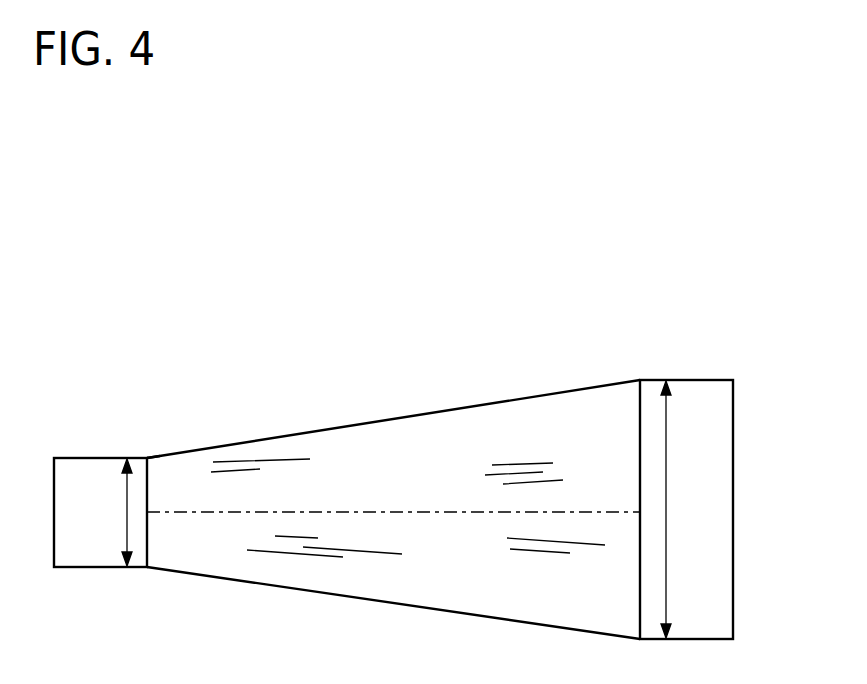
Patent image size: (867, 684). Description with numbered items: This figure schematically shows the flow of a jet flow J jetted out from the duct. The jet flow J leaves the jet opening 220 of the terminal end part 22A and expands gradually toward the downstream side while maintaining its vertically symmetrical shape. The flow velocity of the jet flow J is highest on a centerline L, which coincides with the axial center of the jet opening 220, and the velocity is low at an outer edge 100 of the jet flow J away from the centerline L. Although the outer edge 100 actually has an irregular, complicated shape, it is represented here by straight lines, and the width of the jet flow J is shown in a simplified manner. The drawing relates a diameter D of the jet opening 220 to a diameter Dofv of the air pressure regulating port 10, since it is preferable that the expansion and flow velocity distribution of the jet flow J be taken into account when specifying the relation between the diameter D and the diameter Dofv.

The terminal end part 22A is at (99, 457).
The jet opening 220 is at (148, 471).
The outer edge 100 is at (477, 407).
The air pressure regulating port 10 is at (691, 380).
The jet flow J is at (277, 460).
The centerline L is at (393, 494).
The diameter of the jet opening D is at (117, 512).
The diameter of the air pressure regulating port Dofv is at (693, 509).